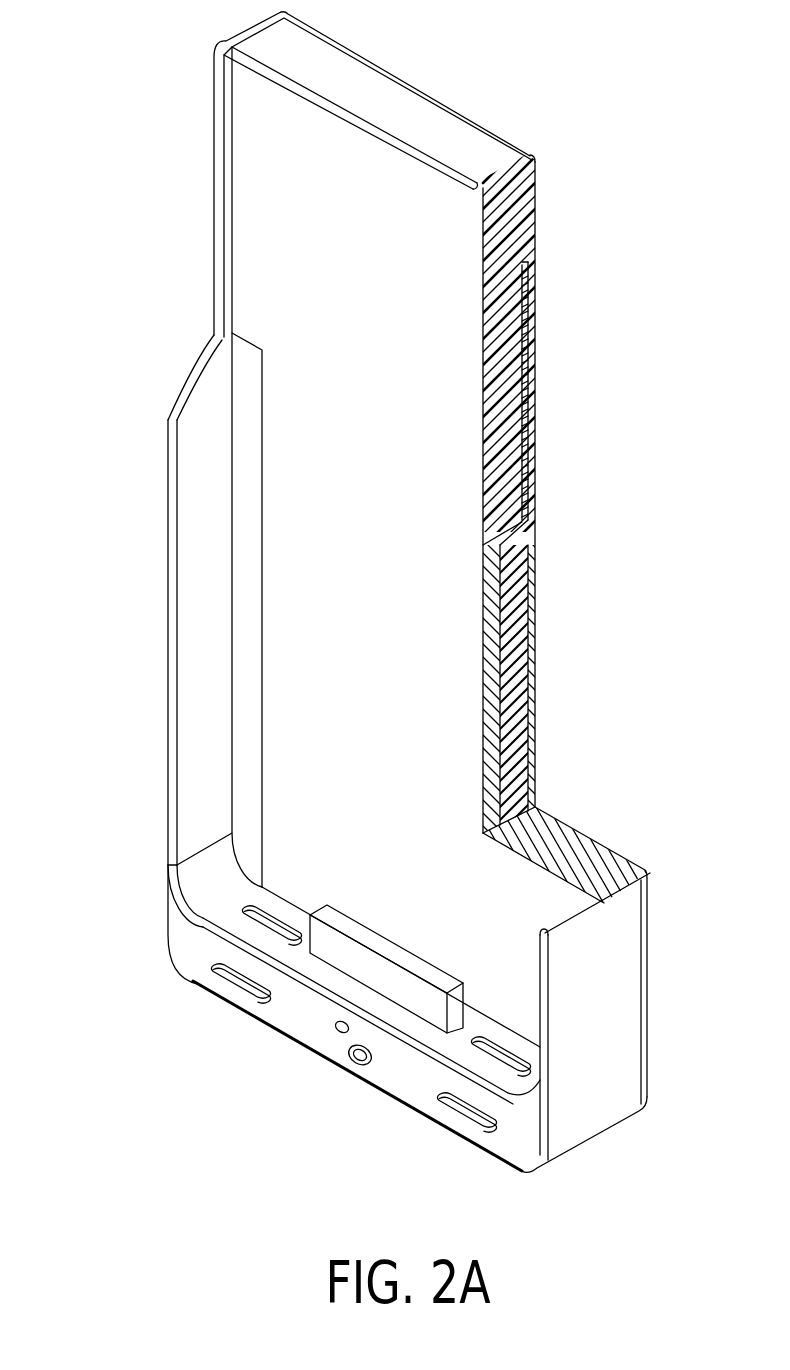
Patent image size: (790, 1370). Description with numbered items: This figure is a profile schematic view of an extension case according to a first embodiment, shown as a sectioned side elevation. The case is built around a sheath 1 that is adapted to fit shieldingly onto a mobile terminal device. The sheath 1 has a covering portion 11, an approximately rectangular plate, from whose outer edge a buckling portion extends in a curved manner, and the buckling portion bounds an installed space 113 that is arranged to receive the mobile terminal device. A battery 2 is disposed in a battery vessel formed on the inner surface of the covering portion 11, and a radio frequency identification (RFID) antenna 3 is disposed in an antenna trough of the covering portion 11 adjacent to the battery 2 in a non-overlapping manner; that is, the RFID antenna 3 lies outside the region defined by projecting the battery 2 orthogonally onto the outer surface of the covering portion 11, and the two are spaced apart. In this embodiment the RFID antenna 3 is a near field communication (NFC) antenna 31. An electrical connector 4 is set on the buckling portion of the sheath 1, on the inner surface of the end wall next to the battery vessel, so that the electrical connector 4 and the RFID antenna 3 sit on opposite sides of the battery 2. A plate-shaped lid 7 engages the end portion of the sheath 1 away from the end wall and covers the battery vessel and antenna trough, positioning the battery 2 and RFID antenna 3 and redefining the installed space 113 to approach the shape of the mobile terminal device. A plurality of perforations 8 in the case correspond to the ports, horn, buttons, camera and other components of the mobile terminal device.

The sheath 1 is at (532, 580).
The battery 2 is at (515, 705).
The radio frequency identification (RFID) antenna 3 is at (579, 403).
The near field communication (NFC) antenna 31 is at (525, 382).
The electrical connector 4 is at (368, 940).
The lid 7 is at (523, 213).
The perforations 8 is at (250, 917).
The covering portion 11 is at (530, 470).
The installed space 113 is at (218, 393).